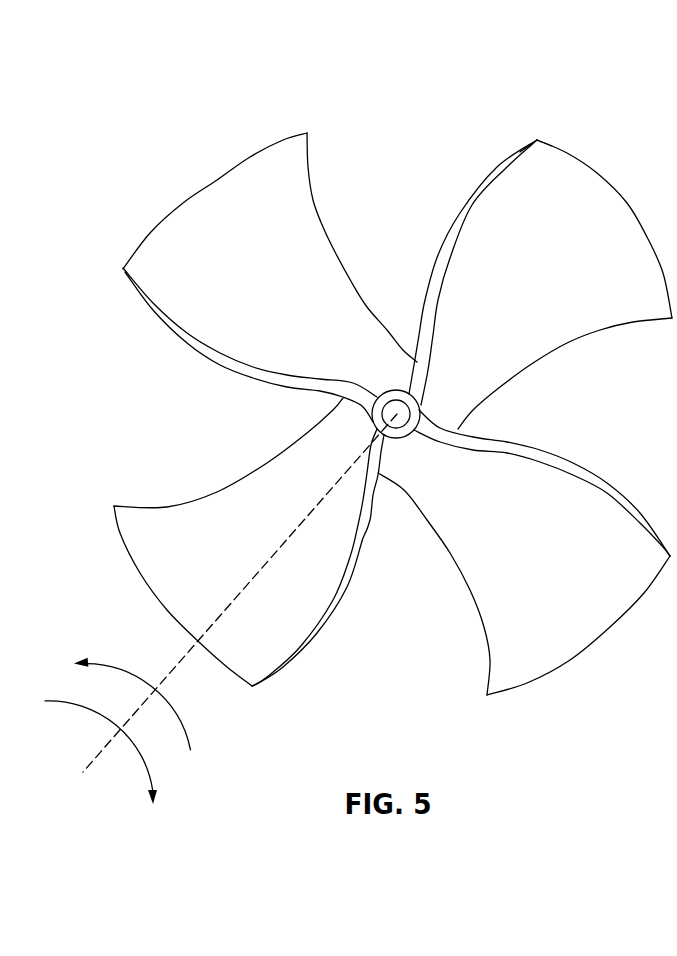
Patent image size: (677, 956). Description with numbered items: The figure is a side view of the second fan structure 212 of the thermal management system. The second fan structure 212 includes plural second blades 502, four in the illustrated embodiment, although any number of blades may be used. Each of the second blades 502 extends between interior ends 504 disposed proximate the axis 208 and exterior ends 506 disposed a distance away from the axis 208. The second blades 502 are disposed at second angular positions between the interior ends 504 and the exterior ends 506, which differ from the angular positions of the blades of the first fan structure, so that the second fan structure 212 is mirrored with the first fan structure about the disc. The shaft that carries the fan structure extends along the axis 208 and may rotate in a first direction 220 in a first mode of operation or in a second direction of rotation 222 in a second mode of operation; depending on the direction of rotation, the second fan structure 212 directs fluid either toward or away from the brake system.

The second fan structure 212 is at (316, 95).
The second blades 502 is at (218, 213).
The interior ends 504 is at (432, 318).
The exterior ends 506 is at (538, 141).
The axis 208 is at (102, 747).
The first direction 220 is at (186, 728).
The second direction of rotation 222 is at (149, 775).